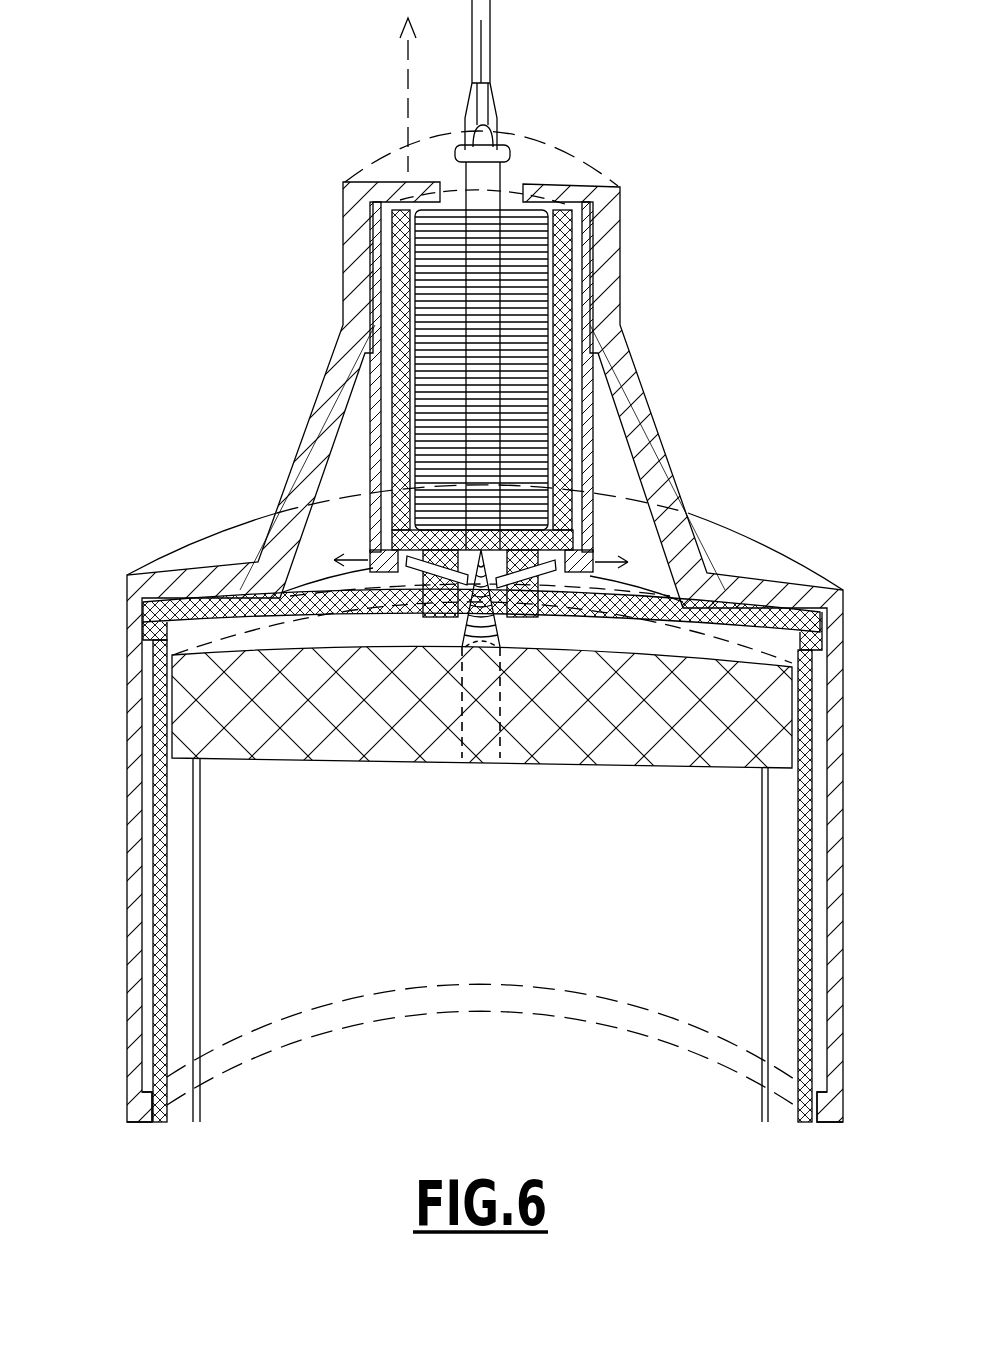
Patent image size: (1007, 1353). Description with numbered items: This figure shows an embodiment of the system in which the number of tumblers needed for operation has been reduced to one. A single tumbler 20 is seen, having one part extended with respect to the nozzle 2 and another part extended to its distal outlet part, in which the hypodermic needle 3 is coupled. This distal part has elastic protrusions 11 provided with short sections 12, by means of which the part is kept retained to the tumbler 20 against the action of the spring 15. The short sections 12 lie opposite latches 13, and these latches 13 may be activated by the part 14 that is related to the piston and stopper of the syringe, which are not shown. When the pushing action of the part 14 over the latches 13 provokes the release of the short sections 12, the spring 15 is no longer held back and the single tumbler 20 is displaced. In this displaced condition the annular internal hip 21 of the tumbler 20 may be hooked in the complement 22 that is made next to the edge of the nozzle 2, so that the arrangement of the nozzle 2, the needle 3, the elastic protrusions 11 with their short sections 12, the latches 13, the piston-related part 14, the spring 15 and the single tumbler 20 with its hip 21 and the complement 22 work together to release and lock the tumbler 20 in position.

The nozzle 2 is at (167, 915).
The hypodermic needle 3 is at (476, 36).
The elastic protrusions 11 is at (585, 458).
The short sections 12 is at (570, 568).
The latches 13 is at (425, 567).
The part related to the piston and stopper 14 is at (482, 695).
The spring 15 is at (440, 288).
The single tumbler 20 is at (137, 883).
The annular internal hip 21 is at (133, 1102).
The complement 22 is at (145, 642).